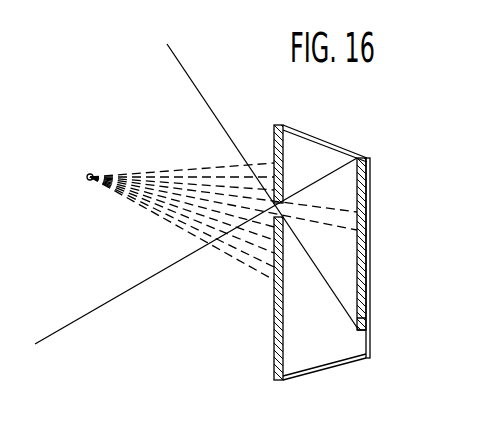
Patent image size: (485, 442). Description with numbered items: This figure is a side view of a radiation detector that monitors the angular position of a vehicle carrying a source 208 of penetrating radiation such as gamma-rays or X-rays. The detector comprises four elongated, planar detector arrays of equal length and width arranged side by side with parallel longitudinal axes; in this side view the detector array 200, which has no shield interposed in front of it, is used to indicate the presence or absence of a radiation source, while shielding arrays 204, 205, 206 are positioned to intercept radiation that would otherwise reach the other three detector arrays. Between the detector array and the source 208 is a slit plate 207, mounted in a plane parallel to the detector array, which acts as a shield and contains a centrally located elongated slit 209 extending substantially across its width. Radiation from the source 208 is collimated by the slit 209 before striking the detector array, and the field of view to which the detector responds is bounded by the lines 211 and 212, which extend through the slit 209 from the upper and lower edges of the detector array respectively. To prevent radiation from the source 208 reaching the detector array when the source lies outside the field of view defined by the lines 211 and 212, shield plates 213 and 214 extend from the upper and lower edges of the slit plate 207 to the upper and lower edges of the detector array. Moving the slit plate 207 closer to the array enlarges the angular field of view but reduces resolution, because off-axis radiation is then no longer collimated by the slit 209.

The detector array 200 is at (322, 251).
The shielding array 204 is at (362, 198).
The shielding array 205 is at (370, 288).
The shielding array 206 is at (364, 318).
The slit plate 207 is at (275, 317).
The source 208 is at (91, 181).
The slit 209 is at (292, 203).
The line 211 is at (107, 302).
The line 212 is at (197, 90).
The shield plate 213 is at (327, 142).
The shield plate 214 is at (327, 368).